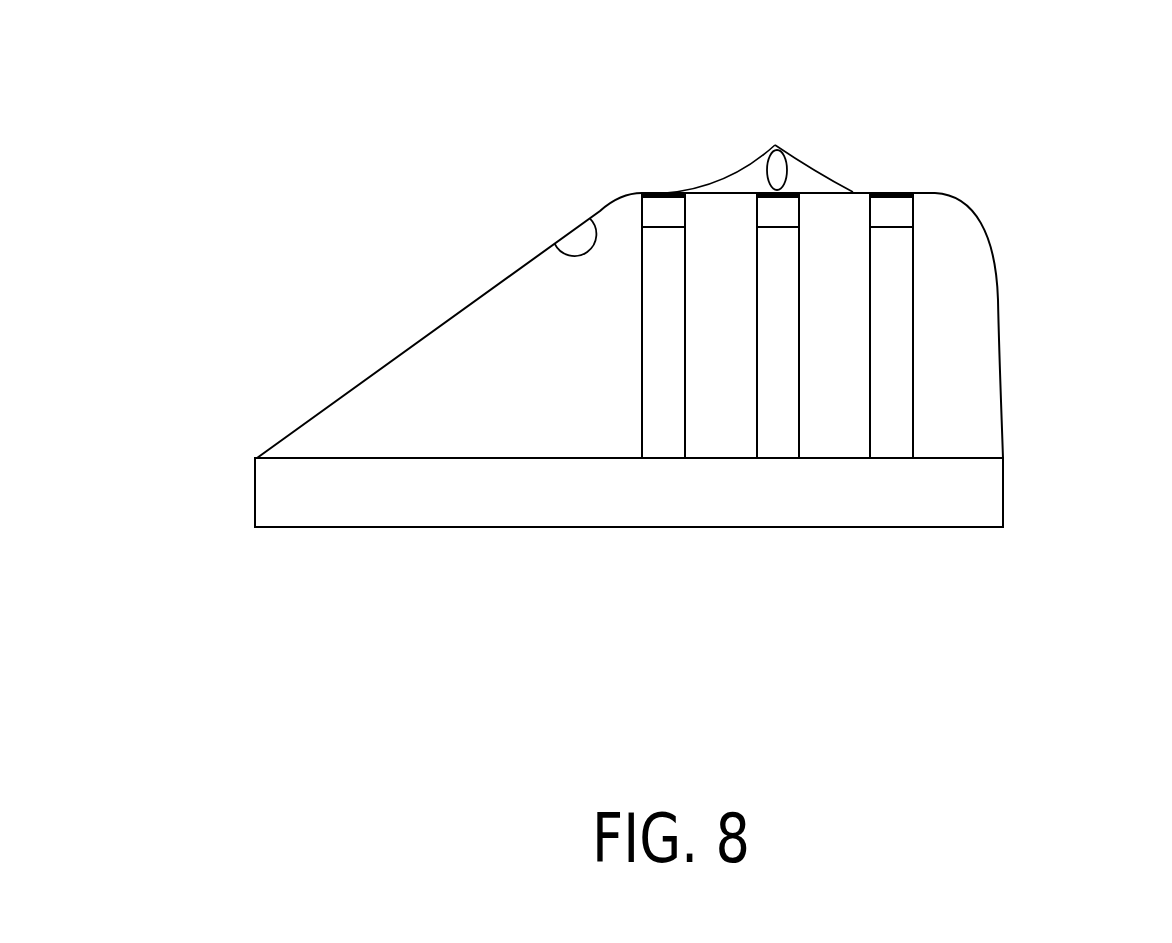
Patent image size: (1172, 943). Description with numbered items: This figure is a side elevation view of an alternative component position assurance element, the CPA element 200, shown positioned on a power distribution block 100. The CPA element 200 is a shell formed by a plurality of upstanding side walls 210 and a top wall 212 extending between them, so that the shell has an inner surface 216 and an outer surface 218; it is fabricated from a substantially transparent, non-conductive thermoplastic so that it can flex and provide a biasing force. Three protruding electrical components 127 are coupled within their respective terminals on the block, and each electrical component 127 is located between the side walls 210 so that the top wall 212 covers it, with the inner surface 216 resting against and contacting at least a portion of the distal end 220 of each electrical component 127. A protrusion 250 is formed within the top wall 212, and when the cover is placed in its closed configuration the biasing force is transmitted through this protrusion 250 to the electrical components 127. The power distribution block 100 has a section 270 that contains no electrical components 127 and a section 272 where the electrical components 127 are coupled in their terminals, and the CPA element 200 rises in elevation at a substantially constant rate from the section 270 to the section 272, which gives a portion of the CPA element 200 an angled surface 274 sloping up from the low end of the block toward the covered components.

The power distribution block 100 is at (225, 490).
The electrical components 127 is at (665, 380).
The component position assurance (CPA) element 200 is at (697, 271).
The side walls 210 is at (1003, 348).
The top wall 212 is at (855, 195).
The inner surface 216 is at (555, 244).
The outer surface 218 is at (485, 294).
The distal end 220 is at (757, 220).
The protrusion 250 is at (767, 170).
The section 270 is at (520, 488).
The section 272 is at (767, 488).
The angled surface 274 is at (412, 346).